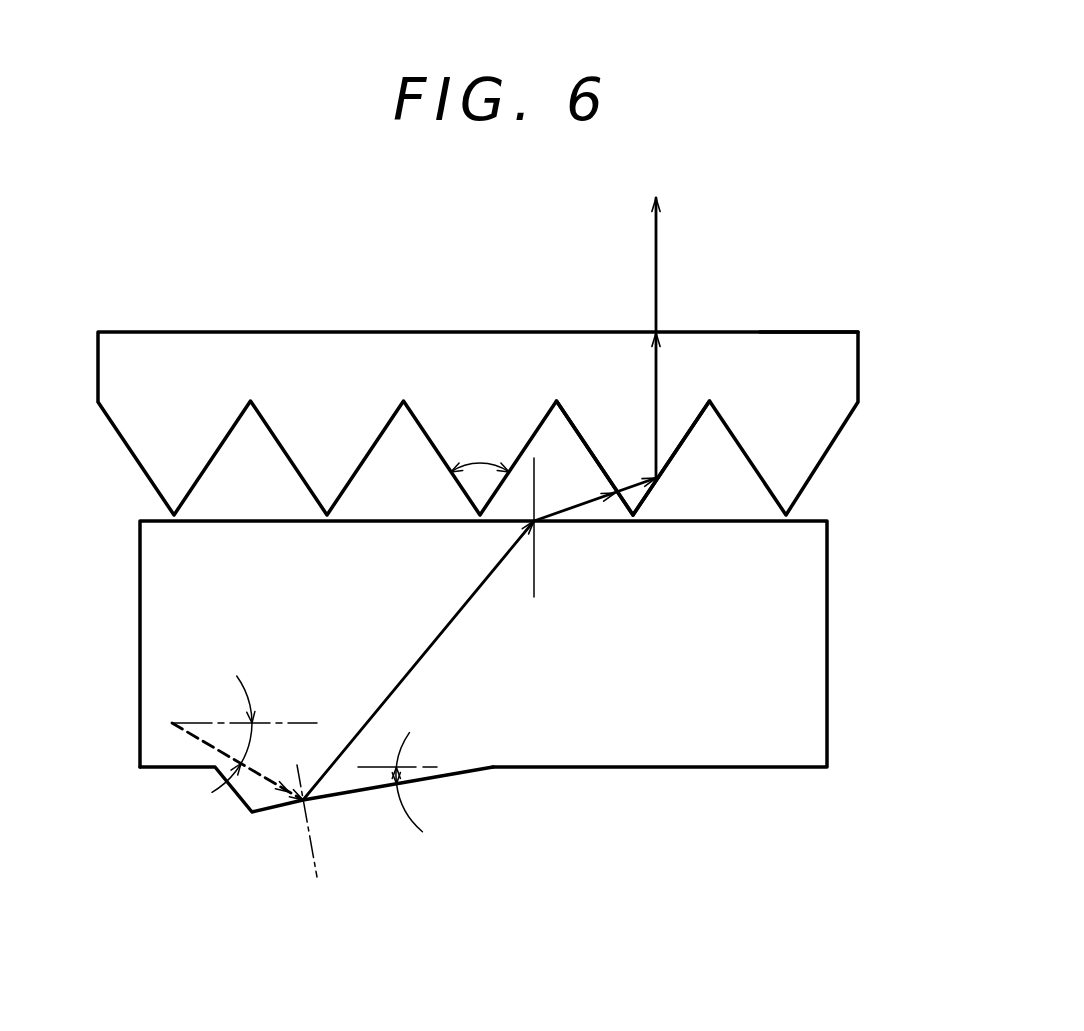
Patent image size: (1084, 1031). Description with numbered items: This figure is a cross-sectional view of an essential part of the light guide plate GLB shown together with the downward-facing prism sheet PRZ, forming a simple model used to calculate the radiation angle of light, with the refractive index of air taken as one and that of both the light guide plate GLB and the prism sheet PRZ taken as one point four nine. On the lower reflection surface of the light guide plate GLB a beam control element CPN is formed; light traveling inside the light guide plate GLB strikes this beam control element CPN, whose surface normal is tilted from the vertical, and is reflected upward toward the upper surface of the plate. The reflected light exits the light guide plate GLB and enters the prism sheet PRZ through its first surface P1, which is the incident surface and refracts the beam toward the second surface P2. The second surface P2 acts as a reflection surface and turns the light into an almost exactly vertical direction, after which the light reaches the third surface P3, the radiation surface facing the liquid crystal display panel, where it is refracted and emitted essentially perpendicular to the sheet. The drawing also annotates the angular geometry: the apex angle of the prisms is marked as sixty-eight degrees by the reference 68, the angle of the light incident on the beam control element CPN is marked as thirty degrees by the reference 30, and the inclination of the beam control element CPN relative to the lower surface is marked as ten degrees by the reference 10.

The prism sheet PRZ is at (183, 350).
The light guide plate GLB is at (153, 597).
The beam control element CPN is at (268, 813).
The first surface P1 is at (590, 460).
The second surface P2 is at (690, 425).
The third surface P3 is at (815, 332).
The prism apex angle 68 degrees 68 is at (480, 447).
The incident angle 30 degrees 30 is at (256, 734).
The inclination angle 10 degrees 10 is at (391, 788).